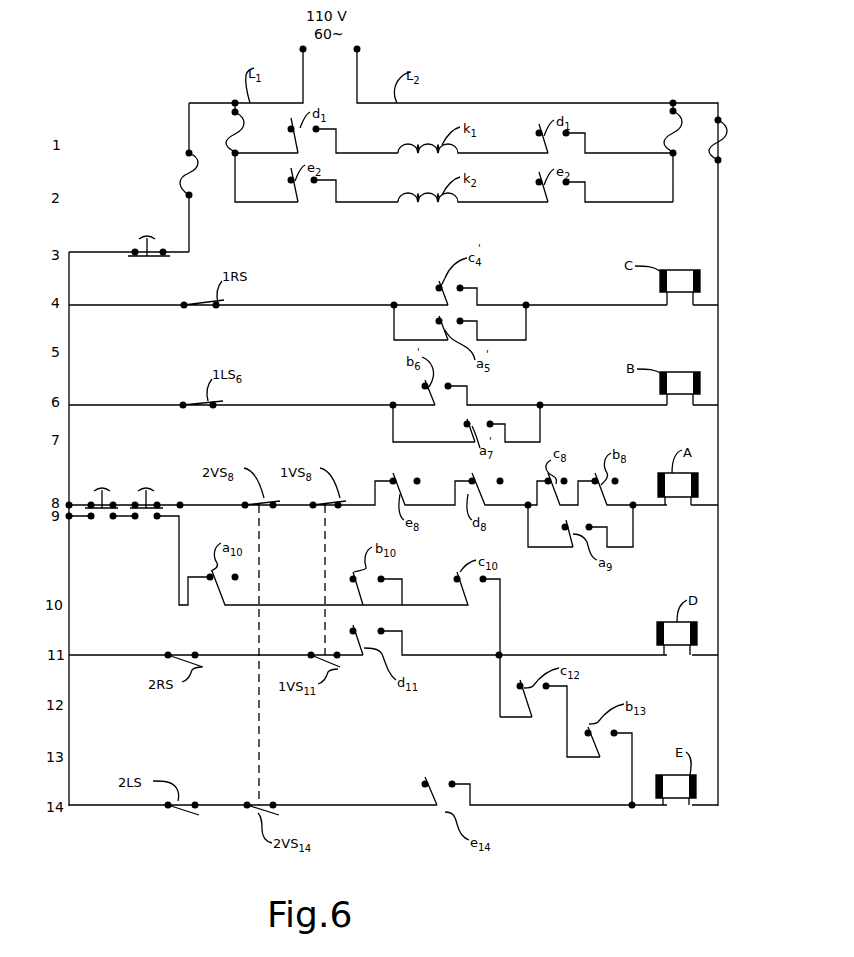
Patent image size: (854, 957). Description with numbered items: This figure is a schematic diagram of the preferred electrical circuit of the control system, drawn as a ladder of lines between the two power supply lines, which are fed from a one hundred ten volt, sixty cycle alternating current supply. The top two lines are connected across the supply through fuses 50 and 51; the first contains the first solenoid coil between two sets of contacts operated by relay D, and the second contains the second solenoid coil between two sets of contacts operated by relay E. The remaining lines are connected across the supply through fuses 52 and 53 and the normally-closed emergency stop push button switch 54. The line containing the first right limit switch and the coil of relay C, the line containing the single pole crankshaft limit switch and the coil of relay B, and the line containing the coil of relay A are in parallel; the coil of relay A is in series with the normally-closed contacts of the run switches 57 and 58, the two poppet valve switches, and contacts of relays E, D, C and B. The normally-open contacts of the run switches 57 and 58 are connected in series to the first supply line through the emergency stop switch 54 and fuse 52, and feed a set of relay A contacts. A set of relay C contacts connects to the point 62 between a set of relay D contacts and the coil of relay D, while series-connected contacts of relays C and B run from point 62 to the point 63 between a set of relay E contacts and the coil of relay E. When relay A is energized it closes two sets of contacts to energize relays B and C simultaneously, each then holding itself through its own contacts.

The fuse 50 is at (240, 129).
The fuse 51 is at (665, 128).
The fuse 52 is at (184, 174).
The fuse 53 is at (725, 158).
The emergency stop push button switch 54 is at (147, 256).
The run switch 57 is at (102, 490).
The run switch 58 is at (146, 490).
The point in line 11 62 is at (501, 652).
The point in line 14 63 is at (632, 808).